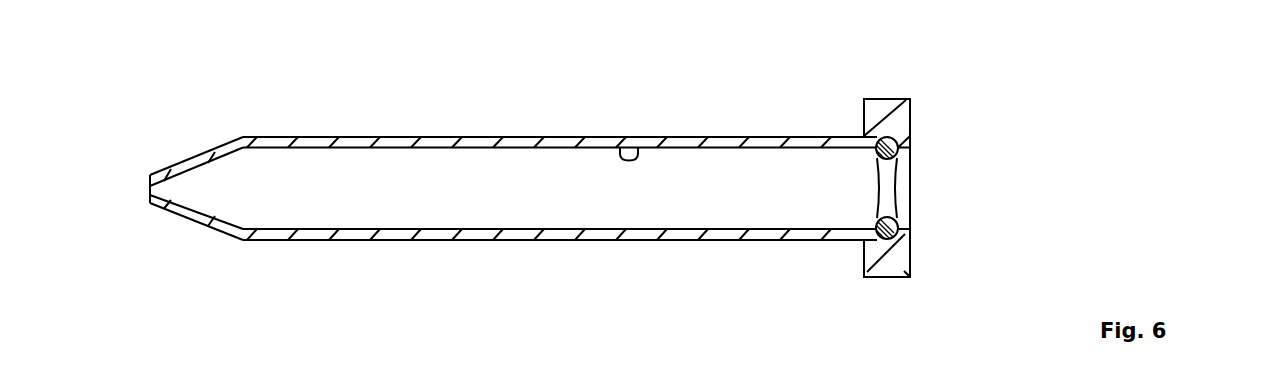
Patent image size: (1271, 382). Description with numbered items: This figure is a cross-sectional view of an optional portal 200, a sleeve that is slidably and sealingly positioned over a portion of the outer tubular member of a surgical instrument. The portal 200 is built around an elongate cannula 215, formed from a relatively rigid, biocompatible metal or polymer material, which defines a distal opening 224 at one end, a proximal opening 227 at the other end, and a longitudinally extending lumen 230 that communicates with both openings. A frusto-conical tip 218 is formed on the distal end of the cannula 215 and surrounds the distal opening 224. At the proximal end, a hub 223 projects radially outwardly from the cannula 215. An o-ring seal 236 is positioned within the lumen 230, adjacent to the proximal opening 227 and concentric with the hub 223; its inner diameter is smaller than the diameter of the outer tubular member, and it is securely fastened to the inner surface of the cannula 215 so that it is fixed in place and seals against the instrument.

The portal 200 is at (803, 108).
The elongate cannula 215 is at (560, 137).
The frusto-conical tip 218 is at (208, 155).
The distal opening 224 is at (150, 187).
The lumen 230 is at (643, 147).
The hub / end cap 223 is at (887, 99).
The proximal opening 227 is at (911, 182).
The o-ring seal 236 is at (900, 222).